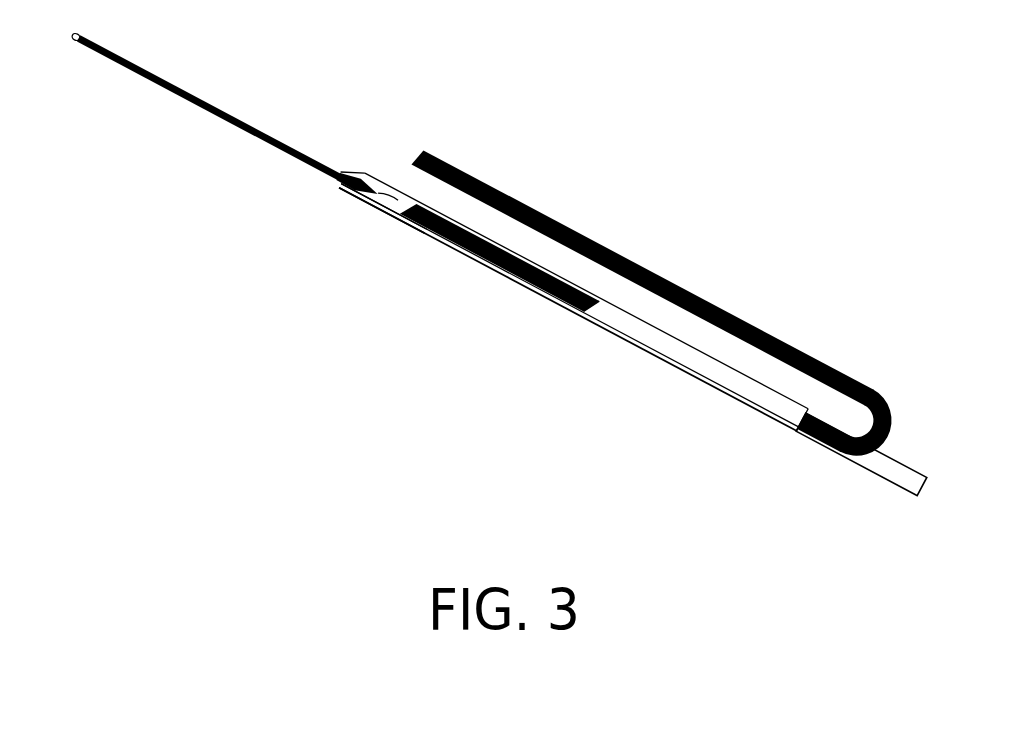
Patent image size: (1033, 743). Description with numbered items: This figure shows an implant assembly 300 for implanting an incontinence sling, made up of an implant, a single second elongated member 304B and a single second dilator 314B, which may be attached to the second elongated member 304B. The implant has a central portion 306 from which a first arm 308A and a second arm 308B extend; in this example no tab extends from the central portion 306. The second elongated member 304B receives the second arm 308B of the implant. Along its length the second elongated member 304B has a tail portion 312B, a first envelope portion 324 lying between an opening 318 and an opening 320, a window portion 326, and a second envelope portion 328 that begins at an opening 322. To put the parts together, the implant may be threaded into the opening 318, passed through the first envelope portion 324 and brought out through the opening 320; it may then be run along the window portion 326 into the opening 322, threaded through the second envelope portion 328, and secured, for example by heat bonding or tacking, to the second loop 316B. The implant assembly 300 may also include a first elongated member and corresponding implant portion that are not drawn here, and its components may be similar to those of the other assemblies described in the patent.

The implant assembly 300 is at (495, 289).
The second elongated member 304B is at (350, 195).
The central portion 306 is at (893, 427).
The first conductor segment 308A is at (622, 254).
The second arm 308B is at (815, 442).
The distal shaft portion 312B is at (880, 466).
The second dilator 314B is at (186, 87).
The second loop 316B is at (76, 42).
The opening 318 is at (796, 425).
The opening 320 is at (598, 305).
The opening 322 is at (400, 213).
The inner conductor 324 is at (721, 378).
The window portion 326 is at (523, 292).
The second envelope portion 328 is at (380, 176).